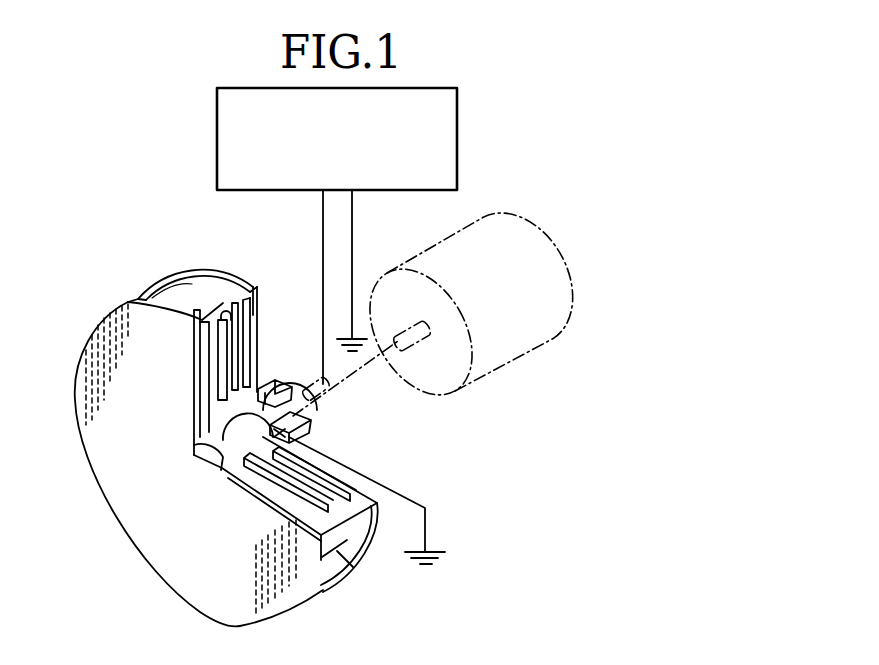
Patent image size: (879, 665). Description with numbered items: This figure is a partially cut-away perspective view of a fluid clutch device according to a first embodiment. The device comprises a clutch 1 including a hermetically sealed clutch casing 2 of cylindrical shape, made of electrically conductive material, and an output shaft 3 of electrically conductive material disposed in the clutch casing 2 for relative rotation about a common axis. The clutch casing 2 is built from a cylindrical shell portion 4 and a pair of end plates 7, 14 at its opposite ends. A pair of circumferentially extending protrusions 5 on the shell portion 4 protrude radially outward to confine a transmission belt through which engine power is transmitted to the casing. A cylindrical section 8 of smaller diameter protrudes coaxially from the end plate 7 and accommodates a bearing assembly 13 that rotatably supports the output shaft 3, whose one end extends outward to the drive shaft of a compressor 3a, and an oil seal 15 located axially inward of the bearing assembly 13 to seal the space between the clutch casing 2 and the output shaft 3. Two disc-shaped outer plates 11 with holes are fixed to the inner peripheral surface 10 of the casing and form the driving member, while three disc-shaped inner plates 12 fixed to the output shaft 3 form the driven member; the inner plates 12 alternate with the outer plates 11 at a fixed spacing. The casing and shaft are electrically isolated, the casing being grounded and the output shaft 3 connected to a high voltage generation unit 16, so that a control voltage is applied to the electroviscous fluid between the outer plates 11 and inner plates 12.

The clutch 1 is at (96, 304).
The clutch casing 2 is at (118, 448).
The output shaft 3 is at (318, 410).
The compressor 3a is at (500, 379).
The cylindrical shell portion 4 is at (355, 572).
The protrusions 5 is at (298, 606).
The end plate 7 is at (355, 498).
The cylindrical section 8 is at (300, 446).
The inner peripheral surface 10 is at (226, 314).
The outer plates 11 is at (205, 322).
The inner plates 12 is at (253, 342).
The bearing assembly 13 is at (323, 422).
The end plate 14 is at (179, 564).
The oil seal 15 is at (263, 387).
The high voltage generation unit 16 is at (457, 136).